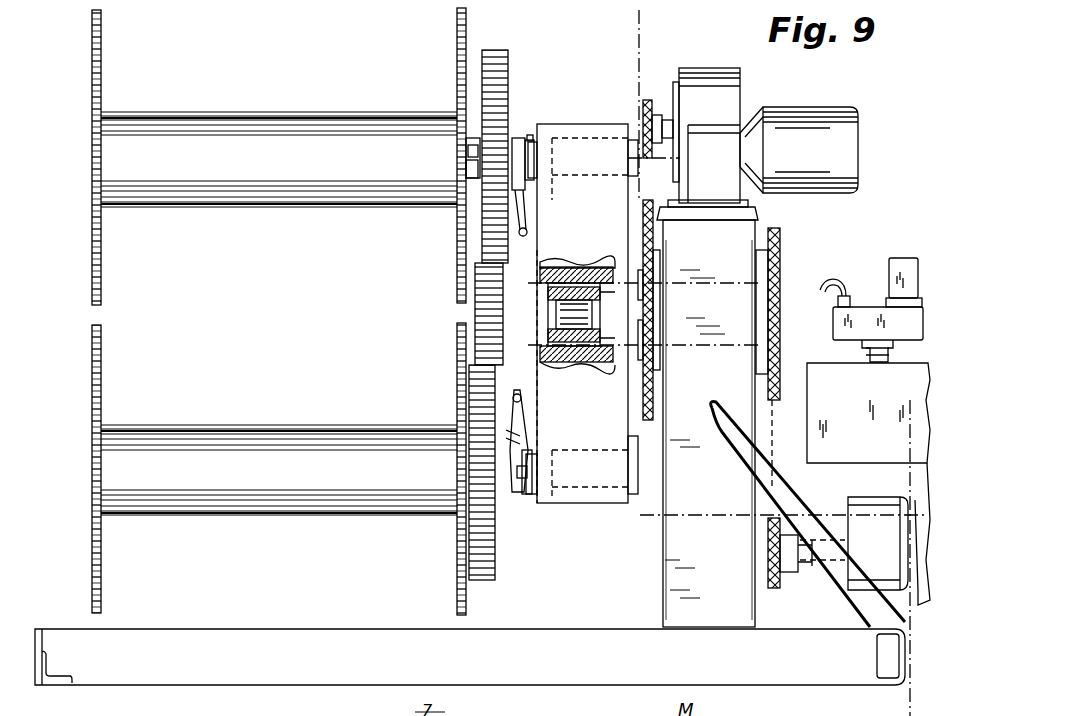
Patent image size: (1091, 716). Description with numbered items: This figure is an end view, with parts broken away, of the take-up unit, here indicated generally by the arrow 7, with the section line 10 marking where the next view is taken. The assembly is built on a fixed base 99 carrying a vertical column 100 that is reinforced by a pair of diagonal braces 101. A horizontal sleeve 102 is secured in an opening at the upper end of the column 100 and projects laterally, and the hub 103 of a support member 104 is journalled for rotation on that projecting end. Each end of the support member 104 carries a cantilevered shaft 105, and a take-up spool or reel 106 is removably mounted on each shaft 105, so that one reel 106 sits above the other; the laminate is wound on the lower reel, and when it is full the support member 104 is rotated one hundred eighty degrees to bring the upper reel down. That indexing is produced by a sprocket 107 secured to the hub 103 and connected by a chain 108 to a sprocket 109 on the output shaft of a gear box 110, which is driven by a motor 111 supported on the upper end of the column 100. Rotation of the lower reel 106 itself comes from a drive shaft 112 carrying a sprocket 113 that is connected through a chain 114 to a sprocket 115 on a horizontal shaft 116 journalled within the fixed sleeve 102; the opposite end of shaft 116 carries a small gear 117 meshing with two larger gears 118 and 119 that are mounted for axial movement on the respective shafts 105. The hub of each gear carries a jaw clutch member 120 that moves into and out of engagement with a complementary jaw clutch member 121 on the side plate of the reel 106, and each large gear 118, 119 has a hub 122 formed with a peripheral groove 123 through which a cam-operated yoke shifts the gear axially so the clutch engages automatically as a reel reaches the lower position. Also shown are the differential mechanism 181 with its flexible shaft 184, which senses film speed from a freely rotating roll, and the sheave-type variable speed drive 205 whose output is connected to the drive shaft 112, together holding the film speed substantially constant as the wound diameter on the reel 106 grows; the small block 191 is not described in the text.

The winch drive assembly 7 is at (524, 50).
The section line 10 is at (678, 22).
The fixed base 99 is at (582, 640).
The vertical column 100 is at (672, 546).
The diagonal braces 101 is at (746, 458).
The horizontal sleeve 102 is at (566, 290).
The hub 103 is at (595, 356).
The support member 104 is at (590, 495).
The shaft 105 is at (537, 145).
The take-up spool or reel 106 is at (92, 45).
The sprocket 107 is at (653, 400).
The chain 108 is at (653, 246).
The sprocket 109 is at (650, 100).
The gear box 110 is at (735, 88).
The motor 111 is at (853, 138).
The drive shaft 112 is at (812, 570).
The sprocket 113 is at (768, 572).
The chain 114 is at (807, 390).
The sprocket 115 is at (781, 255).
The horizontal shaft 116 is at (572, 356).
The small gear 117 is at (475, 270).
The large gear 118 is at (482, 62).
The large gear 119 is at (469, 383).
The jaw clutch member 120 is at (468, 138).
The jaw clutch member 121 is at (470, 162).
The hub 122 is at (516, 138).
The peripheral groove 123 is at (530, 140).
The differential mechanism 181 is at (830, 340).
The flexible shaft 184 is at (850, 282).
The valve block 191 is at (902, 262).
The variable speed drive 205 is at (885, 465).